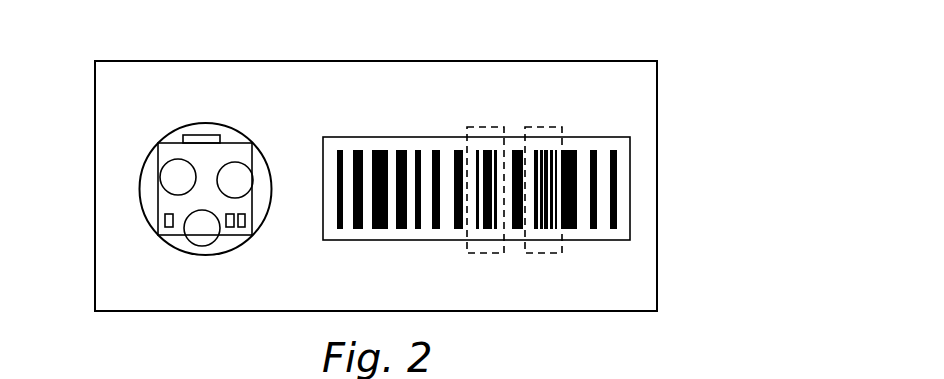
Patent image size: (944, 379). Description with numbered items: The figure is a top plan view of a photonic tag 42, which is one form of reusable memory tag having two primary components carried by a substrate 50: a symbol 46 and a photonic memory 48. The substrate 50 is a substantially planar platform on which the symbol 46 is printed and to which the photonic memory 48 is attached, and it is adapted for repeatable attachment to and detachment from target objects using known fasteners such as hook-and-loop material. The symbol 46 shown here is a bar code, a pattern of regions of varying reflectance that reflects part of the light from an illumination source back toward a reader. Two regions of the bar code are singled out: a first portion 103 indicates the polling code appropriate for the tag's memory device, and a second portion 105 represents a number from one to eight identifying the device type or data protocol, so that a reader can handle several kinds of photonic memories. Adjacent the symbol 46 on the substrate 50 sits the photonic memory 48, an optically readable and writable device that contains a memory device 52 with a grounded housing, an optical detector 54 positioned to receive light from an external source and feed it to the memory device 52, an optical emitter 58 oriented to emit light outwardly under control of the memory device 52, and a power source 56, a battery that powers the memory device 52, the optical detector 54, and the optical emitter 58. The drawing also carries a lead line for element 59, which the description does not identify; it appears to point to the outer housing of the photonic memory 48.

The photonic tag 42 is at (697, 61).
The substrate 50 is at (657, 175).
The symbol 46 is at (613, 230).
The photonic memory 48 is at (212, 123).
The memory device 52 is at (238, 163).
The optical detector 54 is at (163, 161).
The power source 56 is at (190, 130).
The optical emitter 58 is at (202, 246).
The connector housing 59 is at (139, 195).
The first portion 103 is at (540, 127).
The second portion 105 is at (475, 127).